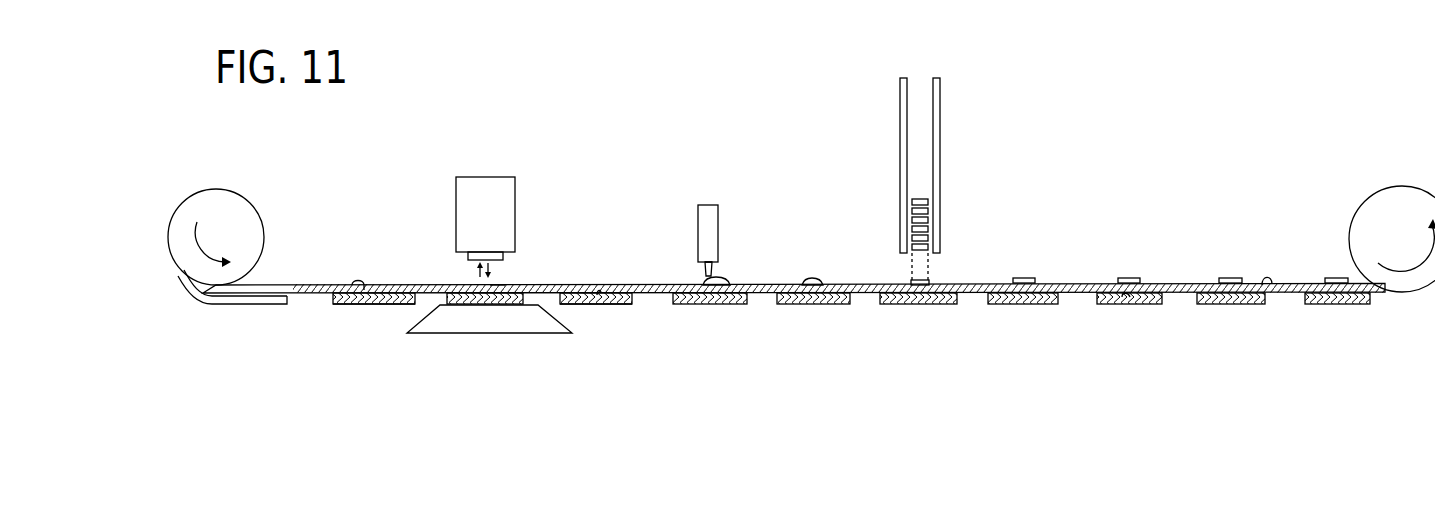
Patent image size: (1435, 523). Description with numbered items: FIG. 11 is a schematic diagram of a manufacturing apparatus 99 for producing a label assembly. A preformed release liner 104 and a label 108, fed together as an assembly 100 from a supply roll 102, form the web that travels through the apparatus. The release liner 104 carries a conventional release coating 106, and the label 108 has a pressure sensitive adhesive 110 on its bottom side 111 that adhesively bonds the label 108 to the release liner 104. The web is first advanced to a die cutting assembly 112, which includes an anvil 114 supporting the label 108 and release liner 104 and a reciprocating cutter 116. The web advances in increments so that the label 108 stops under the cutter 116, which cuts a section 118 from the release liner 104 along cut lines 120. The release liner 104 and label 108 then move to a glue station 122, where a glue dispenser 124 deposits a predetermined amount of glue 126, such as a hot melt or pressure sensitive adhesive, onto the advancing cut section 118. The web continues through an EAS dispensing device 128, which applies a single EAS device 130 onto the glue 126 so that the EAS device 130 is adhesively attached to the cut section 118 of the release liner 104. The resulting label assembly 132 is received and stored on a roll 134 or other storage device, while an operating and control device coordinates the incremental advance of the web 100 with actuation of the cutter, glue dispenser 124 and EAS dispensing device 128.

The manufacturing apparatus 99 is at (708, 166).
The assembly 100 is at (238, 310).
The supply roll 102 is at (237, 204).
The release liner 104 is at (310, 286).
The release coating 106 is at (307, 295).
The label 108 is at (378, 305).
The pressure sensitive adhesive 110 is at (335, 295).
The bottom side 111 is at (352, 285).
The die cutting assembly 112 is at (494, 166).
The anvil 114 is at (480, 320).
The reciprocating cutter 116 is at (505, 257).
The cut section 118 is at (498, 285).
The cut lines 120 is at (468, 285).
The glue station 122 is at (725, 202).
The glue dispenser 124 is at (712, 236).
The glue 126 is at (802, 280).
The EAS dispensing device 128 is at (957, 99).
The EAS device 130 is at (932, 281).
The label assembly 132 is at (1037, 320).
The roll 134 is at (1383, 180).